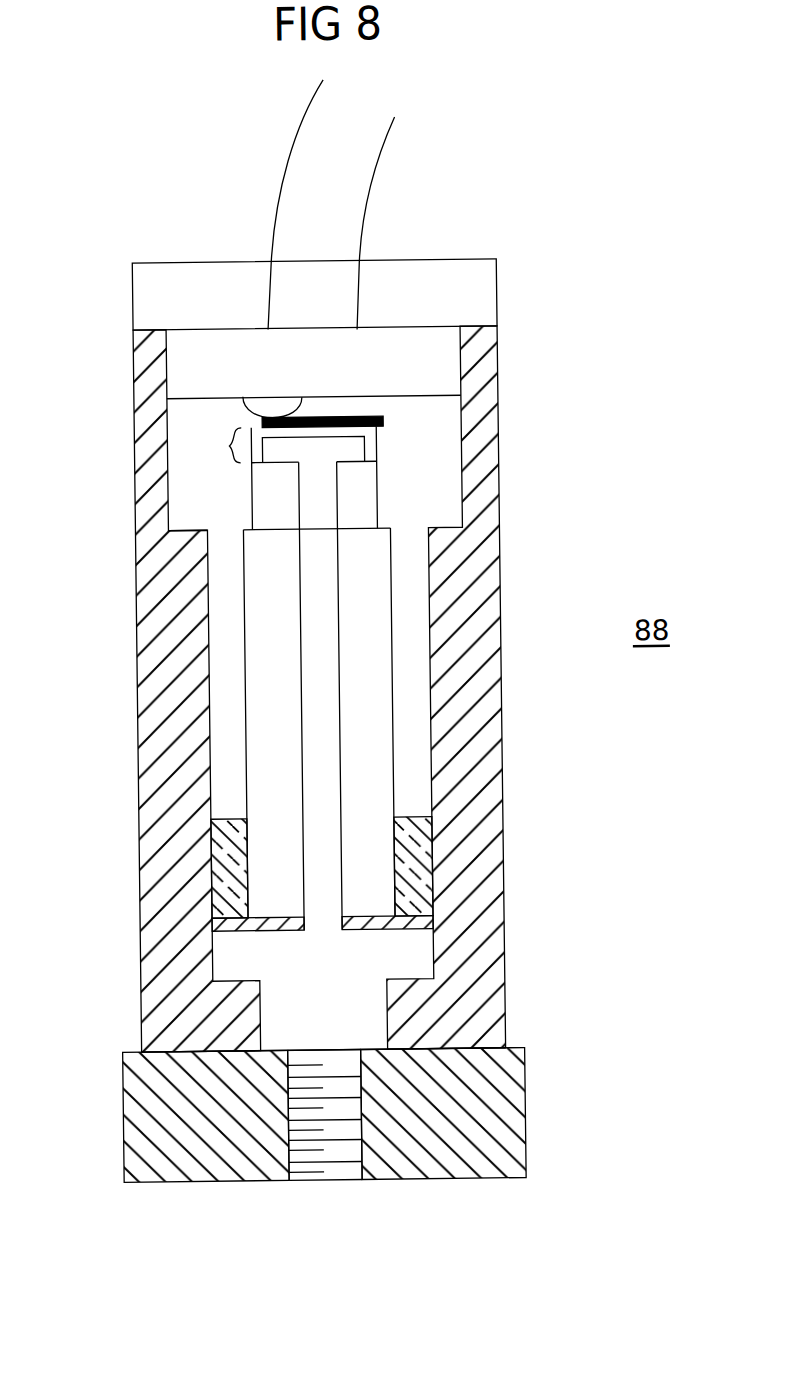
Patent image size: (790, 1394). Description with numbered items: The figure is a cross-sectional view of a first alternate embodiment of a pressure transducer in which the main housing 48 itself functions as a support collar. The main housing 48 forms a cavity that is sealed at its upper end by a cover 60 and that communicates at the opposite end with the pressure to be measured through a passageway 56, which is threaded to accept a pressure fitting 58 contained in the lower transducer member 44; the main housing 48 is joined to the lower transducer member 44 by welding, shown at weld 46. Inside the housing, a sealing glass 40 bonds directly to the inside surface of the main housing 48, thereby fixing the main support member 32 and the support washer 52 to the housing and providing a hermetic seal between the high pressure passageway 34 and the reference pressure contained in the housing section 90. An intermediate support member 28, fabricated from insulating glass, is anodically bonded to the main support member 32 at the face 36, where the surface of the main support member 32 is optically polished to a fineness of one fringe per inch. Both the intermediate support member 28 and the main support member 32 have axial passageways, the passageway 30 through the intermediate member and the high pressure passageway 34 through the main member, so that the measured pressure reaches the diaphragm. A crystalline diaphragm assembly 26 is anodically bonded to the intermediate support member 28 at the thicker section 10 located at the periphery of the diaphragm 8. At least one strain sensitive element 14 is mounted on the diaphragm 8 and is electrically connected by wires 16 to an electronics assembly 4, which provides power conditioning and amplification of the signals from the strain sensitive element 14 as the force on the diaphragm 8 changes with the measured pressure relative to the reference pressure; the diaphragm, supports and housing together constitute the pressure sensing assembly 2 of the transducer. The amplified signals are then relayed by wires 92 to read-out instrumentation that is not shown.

The pressure sensing assembly 2 is at (232, 445).
The electronics assembly 4 is at (432, 357).
The diaphragm 8 is at (376, 431).
The thicker section 10 is at (365, 446).
The strain sensitive element 14 is at (365, 421).
The wires 16 is at (250, 422).
The crystalline diaphragm assembly 26 is at (250, 422).
The intermediate support member 28 is at (364, 498).
The axial passageway 30 is at (302, 498).
The main support member 32 is at (367, 624).
The high pressure passageway 34 is at (313, 656).
The face 36 is at (367, 531).
The sealing glass 40 is at (418, 864).
The lower transducer member 44 is at (482, 1105).
The weld 46 is at (505, 1045).
The main housing 48 is at (477, 739).
The support washer 52 is at (369, 929).
The passageway 56 is at (326, 1153).
The pressure fitting 58 is at (354, 1168).
The cover 60 is at (192, 281).
The housing section 90 is at (212, 512).
The wires 92 is at (391, 143).